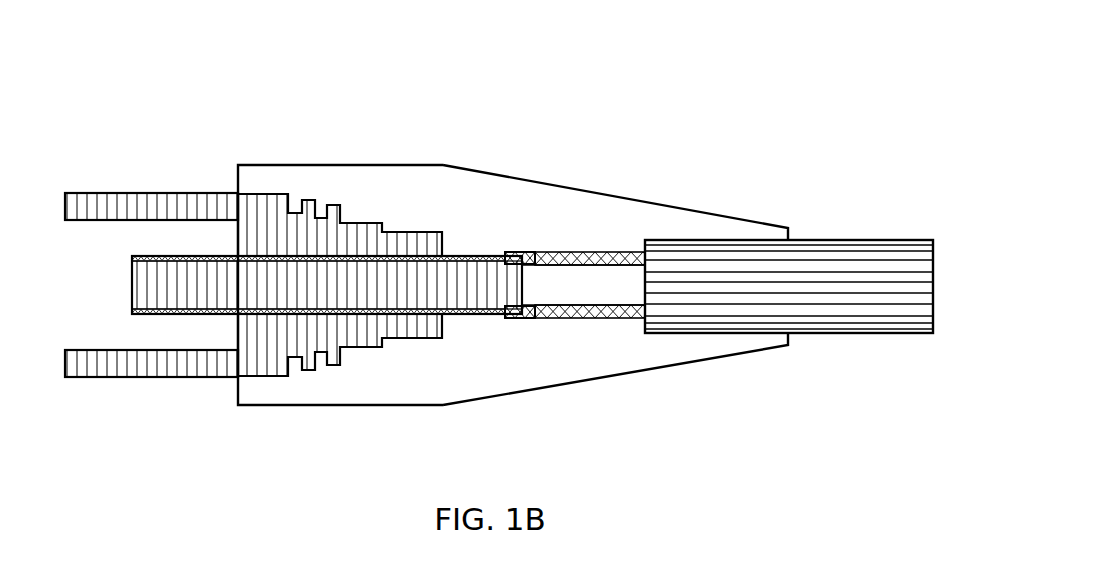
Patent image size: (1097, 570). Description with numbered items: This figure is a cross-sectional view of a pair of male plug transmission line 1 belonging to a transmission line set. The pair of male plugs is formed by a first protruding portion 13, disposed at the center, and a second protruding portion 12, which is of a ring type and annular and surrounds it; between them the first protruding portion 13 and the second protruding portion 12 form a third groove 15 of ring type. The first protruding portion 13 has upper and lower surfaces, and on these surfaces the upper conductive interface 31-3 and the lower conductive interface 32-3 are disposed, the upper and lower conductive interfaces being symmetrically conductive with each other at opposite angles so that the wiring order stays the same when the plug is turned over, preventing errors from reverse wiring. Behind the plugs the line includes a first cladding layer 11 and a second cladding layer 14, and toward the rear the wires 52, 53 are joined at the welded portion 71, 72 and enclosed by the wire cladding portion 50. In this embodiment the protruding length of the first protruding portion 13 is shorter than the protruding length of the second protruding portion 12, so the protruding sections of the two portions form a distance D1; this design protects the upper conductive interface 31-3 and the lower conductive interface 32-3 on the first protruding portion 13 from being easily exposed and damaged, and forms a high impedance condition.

The pair of male plug transmission line 1 is at (499, 260).
The first cladding layer 11 is at (368, 180).
The second protruding portion 12 is at (90, 215).
The first protruding portion 13 is at (326, 280).
The second cladding layer 14 is at (498, 192).
The third groove 15 is at (155, 329).
The upper conductive interface 31-3 is at (198, 252).
The lower conductive interface 32-3 is at (213, 316).
The wire cladding portion 50 is at (840, 260).
The wire 52 is at (612, 320).
The wire 53 is at (612, 255).
The welded portion 71 is at (527, 250).
The welded portion 72 is at (520, 320).
The distance D1 is at (65, 220).